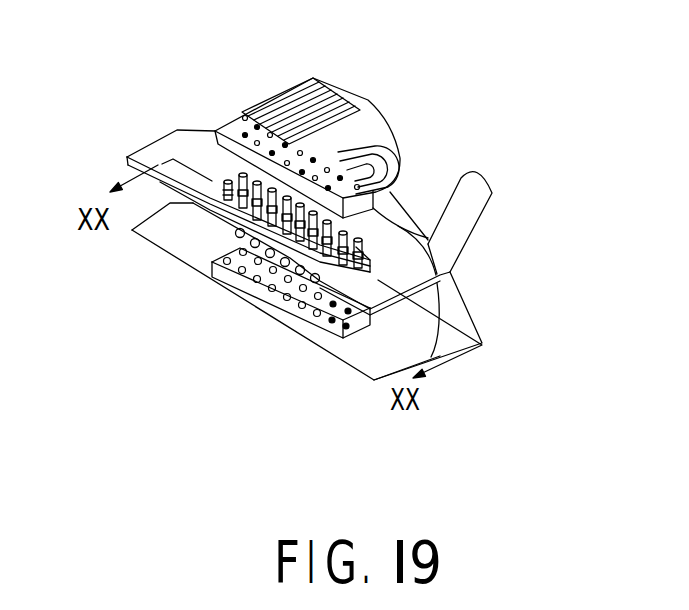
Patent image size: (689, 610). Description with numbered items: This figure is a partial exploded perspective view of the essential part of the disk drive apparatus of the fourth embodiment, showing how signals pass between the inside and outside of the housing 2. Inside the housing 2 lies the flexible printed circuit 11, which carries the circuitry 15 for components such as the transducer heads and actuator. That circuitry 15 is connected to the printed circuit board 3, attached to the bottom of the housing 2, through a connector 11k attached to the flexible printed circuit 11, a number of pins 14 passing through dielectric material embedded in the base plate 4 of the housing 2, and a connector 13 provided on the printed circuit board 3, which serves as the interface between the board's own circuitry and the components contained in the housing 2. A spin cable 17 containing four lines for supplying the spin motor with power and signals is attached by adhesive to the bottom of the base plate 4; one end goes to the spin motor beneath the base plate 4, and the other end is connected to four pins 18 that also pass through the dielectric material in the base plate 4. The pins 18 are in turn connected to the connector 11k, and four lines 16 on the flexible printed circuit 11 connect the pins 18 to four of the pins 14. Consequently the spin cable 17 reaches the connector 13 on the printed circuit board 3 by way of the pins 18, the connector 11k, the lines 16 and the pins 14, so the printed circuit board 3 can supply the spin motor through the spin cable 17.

The housing 2 is at (412, 256).
The printed circuit board 3 is at (387, 341).
The base plate 4 is at (183, 156).
The flexible printed circuit 11 is at (368, 124).
The connector 11k is at (239, 113).
The connector 13 is at (257, 297).
The pins 14 is at (220, 176).
The circuitry 15 is at (292, 97).
The lines 16 is at (377, 133).
The spin cable 17 is at (486, 214).
The pins 18 is at (366, 248).